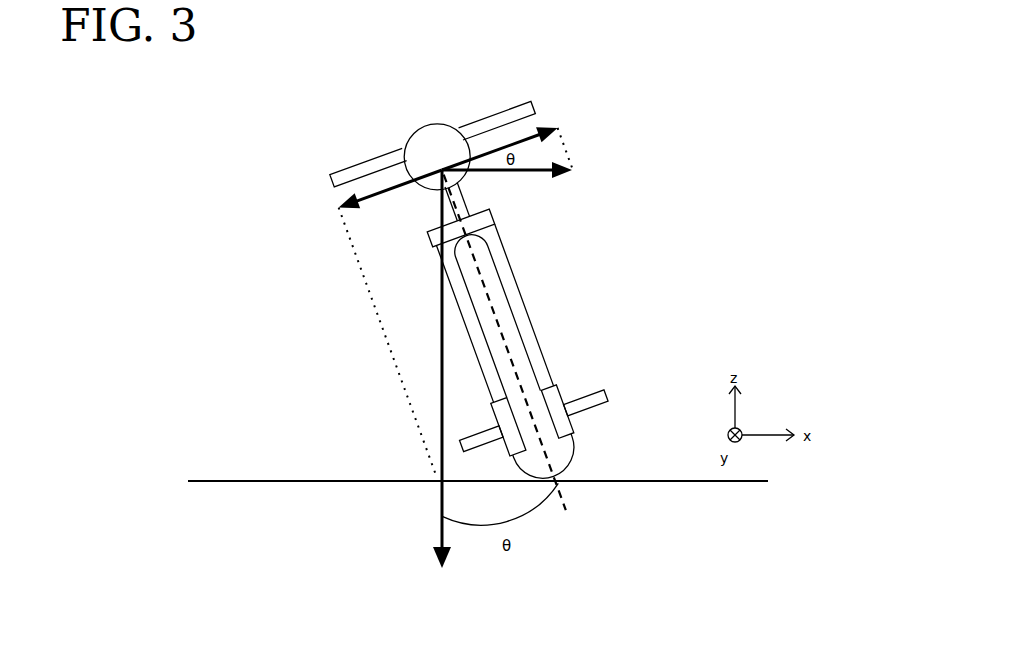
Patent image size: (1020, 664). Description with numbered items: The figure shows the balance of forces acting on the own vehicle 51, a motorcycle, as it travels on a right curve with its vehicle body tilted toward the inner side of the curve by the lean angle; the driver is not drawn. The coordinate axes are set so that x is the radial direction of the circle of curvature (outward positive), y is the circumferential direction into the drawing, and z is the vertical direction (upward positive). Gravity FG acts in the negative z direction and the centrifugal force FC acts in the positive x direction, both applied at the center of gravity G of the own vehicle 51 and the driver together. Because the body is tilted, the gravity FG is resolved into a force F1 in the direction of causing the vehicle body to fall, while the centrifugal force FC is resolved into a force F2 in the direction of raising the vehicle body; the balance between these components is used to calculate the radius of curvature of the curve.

The own vehicle 51 is at (512, 326).
The center of gravity G is at (444, 167).
The force in the direction of causing the vehicle body to fall F1 is at (383, 197).
The force in the direction of raising the vehicle body F2 is at (540, 152).
The centrifugal force FC is at (525, 176).
The gravity FG is at (440, 381).